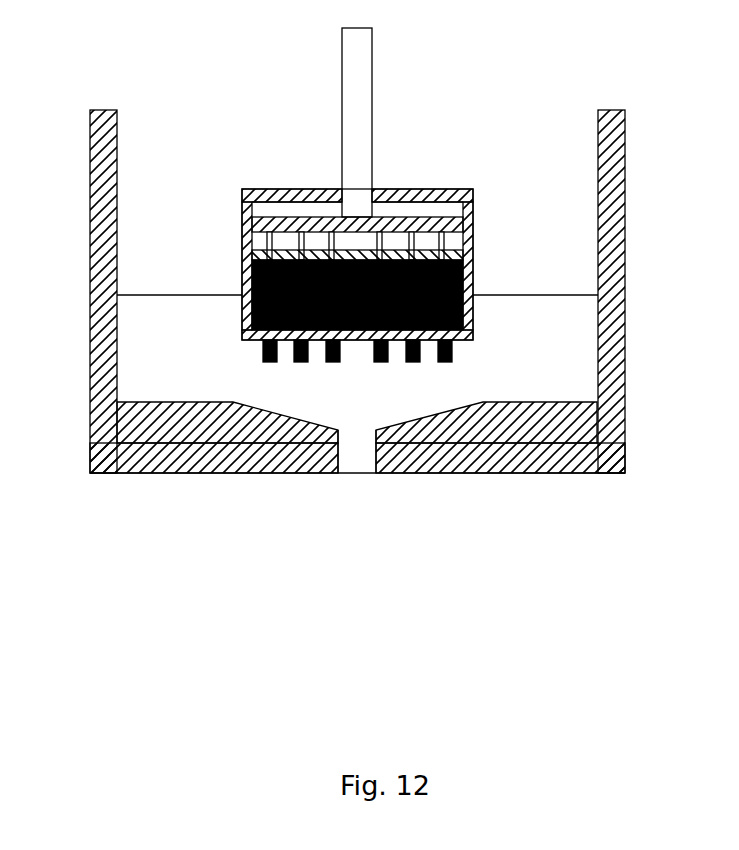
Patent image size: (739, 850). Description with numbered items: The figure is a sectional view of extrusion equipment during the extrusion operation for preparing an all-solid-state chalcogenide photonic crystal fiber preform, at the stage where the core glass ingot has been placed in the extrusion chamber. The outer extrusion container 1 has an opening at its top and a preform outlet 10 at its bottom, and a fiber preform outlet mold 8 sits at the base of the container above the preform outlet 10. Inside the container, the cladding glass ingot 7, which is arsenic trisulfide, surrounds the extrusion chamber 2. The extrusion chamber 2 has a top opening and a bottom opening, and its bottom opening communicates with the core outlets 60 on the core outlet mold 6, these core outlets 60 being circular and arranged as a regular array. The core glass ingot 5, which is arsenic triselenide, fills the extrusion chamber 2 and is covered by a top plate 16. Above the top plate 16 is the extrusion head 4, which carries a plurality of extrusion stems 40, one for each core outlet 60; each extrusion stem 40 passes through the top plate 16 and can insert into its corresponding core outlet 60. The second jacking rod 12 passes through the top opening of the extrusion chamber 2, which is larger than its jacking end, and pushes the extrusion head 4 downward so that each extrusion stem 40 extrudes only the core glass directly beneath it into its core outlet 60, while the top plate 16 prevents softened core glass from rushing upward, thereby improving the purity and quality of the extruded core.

The extrusion container 1 is at (97, 170).
The extrusion chamber 2 is at (247, 270).
The extrusion head 4 is at (243, 192).
The extrusion stems 40 is at (247, 228).
The top plate 16 is at (472, 237).
The core glass ingot 5 is at (472, 270).
The core outlet mold 6 is at (243, 332).
The core outlets 60 is at (457, 348).
The cladding glass ingot 7 is at (137, 345).
The fiber preform outlet mold 8 is at (537, 430).
The preform outlet 10 is at (358, 462).
The second jacking rod 12 is at (348, 115).